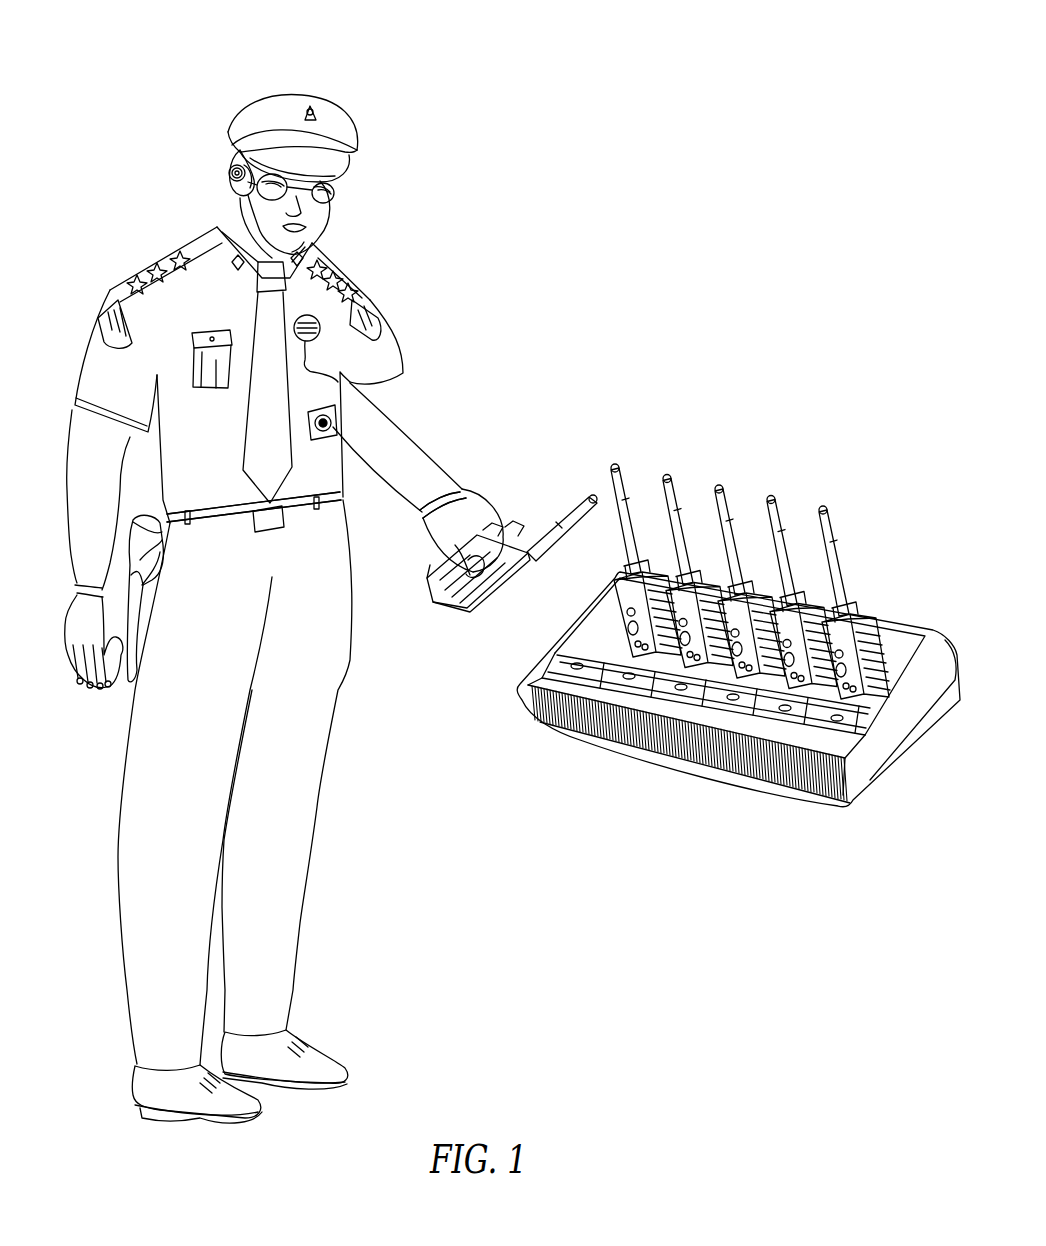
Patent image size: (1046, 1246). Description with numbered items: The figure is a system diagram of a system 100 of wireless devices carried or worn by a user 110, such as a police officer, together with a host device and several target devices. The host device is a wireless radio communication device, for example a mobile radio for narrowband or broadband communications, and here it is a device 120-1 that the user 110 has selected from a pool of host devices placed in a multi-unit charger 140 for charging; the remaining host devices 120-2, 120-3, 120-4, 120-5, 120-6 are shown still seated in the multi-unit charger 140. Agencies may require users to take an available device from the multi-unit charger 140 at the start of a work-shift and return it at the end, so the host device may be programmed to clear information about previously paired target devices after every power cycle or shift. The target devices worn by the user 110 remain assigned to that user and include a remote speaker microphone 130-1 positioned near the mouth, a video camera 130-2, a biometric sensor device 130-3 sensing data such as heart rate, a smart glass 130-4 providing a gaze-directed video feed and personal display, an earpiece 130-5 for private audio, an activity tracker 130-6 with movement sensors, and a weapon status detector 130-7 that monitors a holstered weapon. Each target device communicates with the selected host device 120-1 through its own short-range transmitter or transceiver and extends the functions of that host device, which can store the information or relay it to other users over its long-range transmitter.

The system 100 is at (160, 34).
The user 110 is at (152, 260).
The host device 120-1 is at (445, 610).
The host device 120-2 is at (613, 463).
The host device 120-3 is at (675, 492).
The portable radio 120-4 is at (732, 502).
The portable radio 120-5 is at (770, 497).
The portable radio 120-6 is at (835, 541).
The remote speaker microphone 130-1 is at (322, 318).
The video camera 130-2 is at (328, 406).
The biometric sensor device 130-3 is at (220, 530).
The smart glass 130-4 is at (337, 191).
The earpiece 130-5 is at (227, 181).
The activity tracker 130-6 is at (457, 490).
The weapon status detector 130-7 is at (137, 663).
The multi-unit charger 140 is at (910, 762).